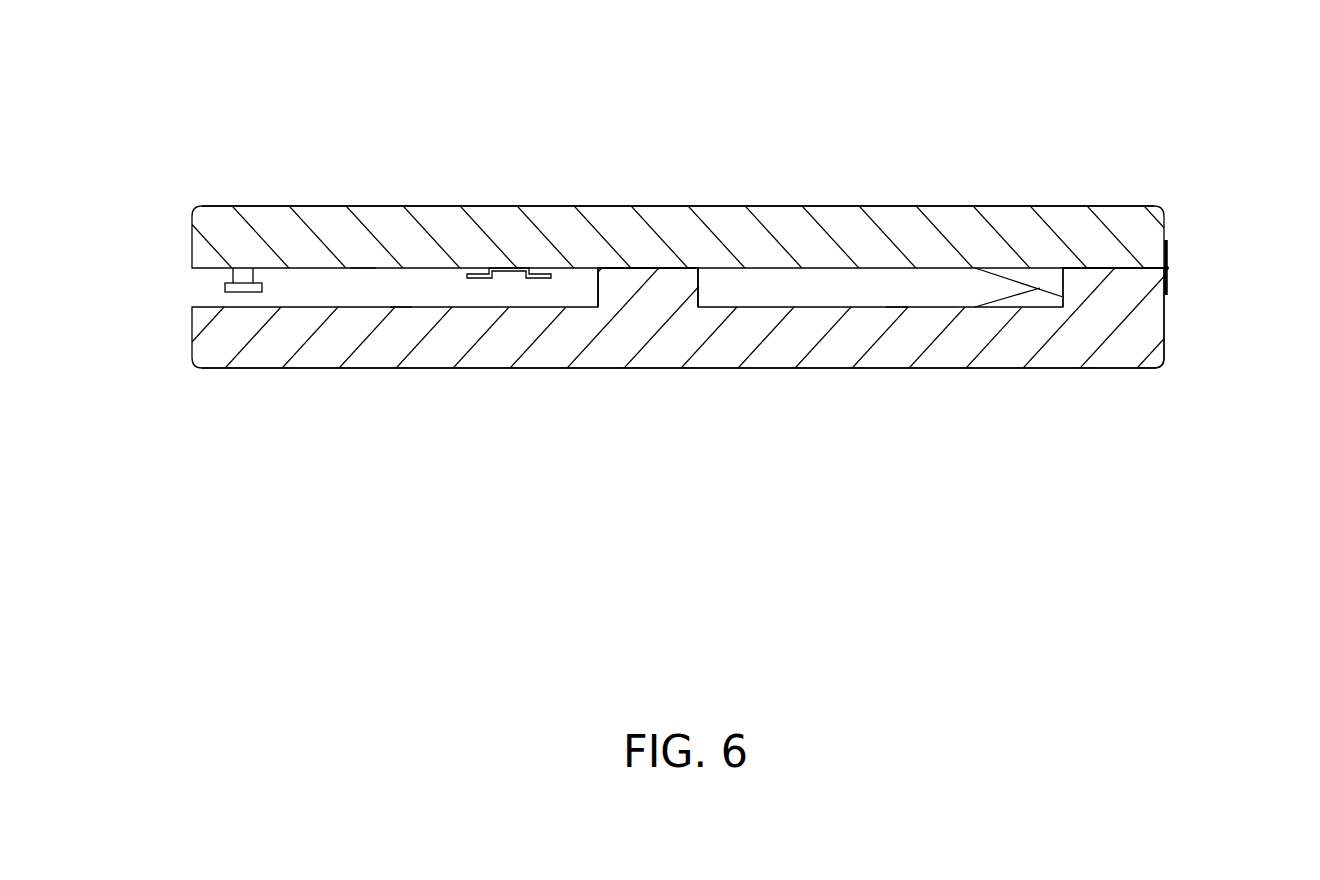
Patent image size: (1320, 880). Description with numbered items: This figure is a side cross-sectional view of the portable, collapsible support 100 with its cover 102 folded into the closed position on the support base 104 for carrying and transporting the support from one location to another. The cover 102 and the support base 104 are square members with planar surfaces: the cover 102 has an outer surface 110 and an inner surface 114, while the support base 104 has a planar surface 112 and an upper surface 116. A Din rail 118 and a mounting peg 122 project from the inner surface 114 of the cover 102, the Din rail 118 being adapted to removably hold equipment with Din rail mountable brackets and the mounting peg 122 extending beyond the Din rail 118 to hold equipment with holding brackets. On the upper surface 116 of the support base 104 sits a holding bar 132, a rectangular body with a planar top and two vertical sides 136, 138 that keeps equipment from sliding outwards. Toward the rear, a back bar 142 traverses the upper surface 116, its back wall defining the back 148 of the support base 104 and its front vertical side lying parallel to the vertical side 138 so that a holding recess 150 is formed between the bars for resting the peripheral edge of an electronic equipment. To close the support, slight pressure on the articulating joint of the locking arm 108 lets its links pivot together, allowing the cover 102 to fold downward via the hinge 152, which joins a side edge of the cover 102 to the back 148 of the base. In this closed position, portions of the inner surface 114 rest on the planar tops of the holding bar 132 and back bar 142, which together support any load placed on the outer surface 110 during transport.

The portable, collapsible support 100 is at (593, 110).
The cover 102 is at (291, 195).
The support base 104 is at (272, 376).
The locking arm 108 is at (1048, 272).
The outer surface of cover 110 is at (755, 205).
The planar surface of support base 112 is at (843, 369).
The inner surface of cover 114 is at (356, 268).
The upper surface of support base 116 is at (393, 307).
The Din rail 118 is at (477, 280).
The mounting peg 122 is at (222, 278).
The holding bar 132 is at (668, 278).
The vertical side of holding bar 136 is at (598, 305).
The vertical side of holding bar 138 is at (699, 278).
The back bar 142 is at (1122, 286).
The back of support base 148 is at (1167, 320).
The holding recess 150 is at (891, 307).
The hinge 152 is at (1167, 253).